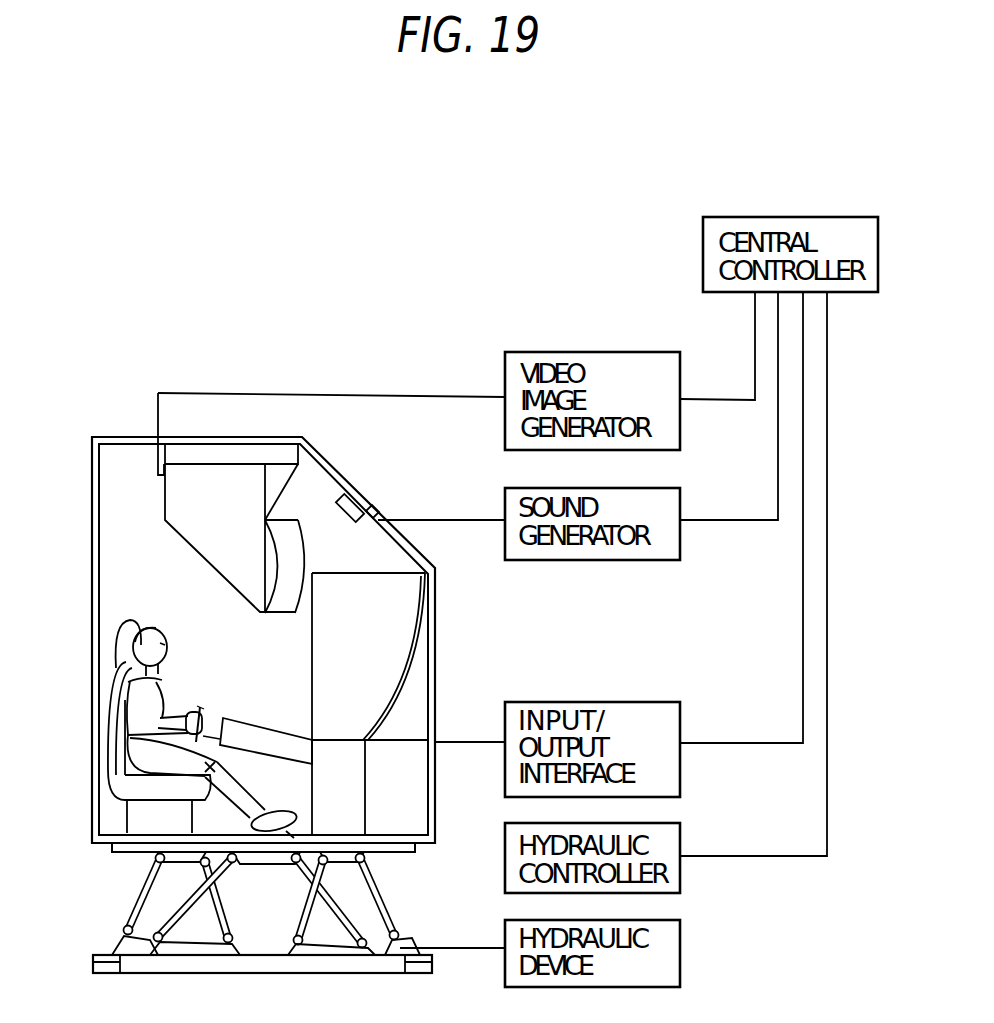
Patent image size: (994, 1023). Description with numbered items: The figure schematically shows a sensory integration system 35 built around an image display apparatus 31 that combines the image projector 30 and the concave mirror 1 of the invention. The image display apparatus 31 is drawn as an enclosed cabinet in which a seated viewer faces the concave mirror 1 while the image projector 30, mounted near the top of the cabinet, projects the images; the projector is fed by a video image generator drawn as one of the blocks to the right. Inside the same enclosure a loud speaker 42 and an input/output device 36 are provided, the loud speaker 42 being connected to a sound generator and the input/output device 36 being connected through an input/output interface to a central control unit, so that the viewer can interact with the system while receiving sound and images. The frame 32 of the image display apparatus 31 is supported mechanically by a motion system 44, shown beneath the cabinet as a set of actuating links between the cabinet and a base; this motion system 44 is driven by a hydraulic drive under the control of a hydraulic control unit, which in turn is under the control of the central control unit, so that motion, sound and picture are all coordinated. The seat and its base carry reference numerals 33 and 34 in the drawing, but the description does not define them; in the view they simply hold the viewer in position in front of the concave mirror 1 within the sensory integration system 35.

The concave mirror 1 is at (412, 680).
The image projector 30 is at (297, 497).
The image display apparatus 31 is at (125, 436).
The frame 32 is at (376, 518).
The seat back and headrest 33 is at (140, 618).
The seat cushion base 34 is at (108, 760).
The sensory integration system 35 is at (96, 850).
The input/output device 36 is at (295, 745).
The loud speaker 42 is at (358, 506).
The motion system 44 is at (380, 893).